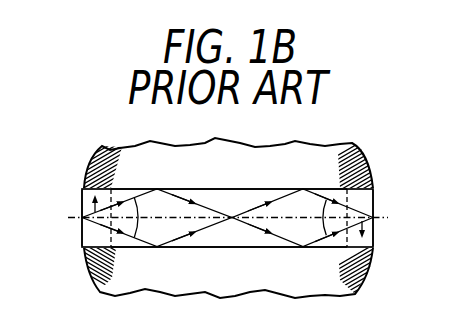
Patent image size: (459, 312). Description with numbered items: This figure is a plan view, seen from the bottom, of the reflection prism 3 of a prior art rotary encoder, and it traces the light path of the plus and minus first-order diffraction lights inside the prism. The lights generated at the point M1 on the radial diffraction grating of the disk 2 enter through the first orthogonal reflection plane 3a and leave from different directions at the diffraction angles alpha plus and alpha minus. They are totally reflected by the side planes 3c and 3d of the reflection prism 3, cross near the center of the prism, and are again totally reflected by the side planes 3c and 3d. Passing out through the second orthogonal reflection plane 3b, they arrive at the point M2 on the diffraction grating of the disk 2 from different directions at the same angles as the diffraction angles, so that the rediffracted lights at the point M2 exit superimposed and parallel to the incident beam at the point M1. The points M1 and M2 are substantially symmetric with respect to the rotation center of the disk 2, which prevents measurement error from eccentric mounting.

The disk 2 is at (320, 152).
The reflection prism 3 is at (254, 248).
The first orthogonal reflection plane 3a is at (85, 237).
The second orthogonal reflection plane 3b is at (371, 237).
The side plane 3c is at (208, 188).
The side plane 3d is at (208, 248).
The point M1 is at (88, 216).
The point M2 is at (374, 219).